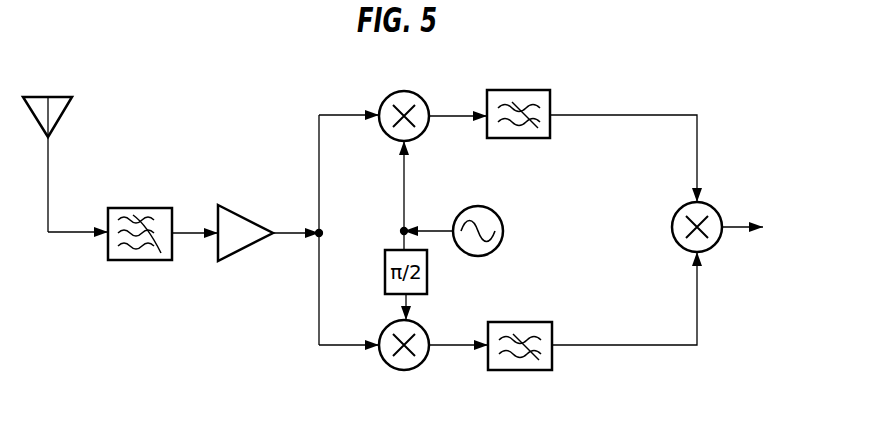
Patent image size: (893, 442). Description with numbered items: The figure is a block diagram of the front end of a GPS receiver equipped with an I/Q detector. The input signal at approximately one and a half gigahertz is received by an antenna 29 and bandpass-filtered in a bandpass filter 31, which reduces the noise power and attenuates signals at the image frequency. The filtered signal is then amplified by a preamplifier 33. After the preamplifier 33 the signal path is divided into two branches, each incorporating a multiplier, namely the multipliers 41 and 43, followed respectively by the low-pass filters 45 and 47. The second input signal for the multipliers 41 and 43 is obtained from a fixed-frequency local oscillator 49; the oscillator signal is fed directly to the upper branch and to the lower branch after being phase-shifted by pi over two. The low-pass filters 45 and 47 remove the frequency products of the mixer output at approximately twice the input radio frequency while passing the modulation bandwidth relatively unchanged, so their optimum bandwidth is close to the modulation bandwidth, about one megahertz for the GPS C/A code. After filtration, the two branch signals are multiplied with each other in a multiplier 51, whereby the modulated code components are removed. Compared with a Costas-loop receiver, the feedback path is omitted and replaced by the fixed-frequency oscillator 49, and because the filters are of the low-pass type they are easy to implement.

The antenna 29 is at (50, 140).
The bandpass filter 31 is at (133, 260).
The preamplifier 33 is at (243, 256).
The multiplier 41 is at (392, 93).
The multiplier 43 is at (403, 372).
The low-pass filter 45 is at (508, 138).
The low-pass filter 47 is at (513, 322).
The oscillator 49 is at (470, 257).
The multiplier 51 is at (708, 203).